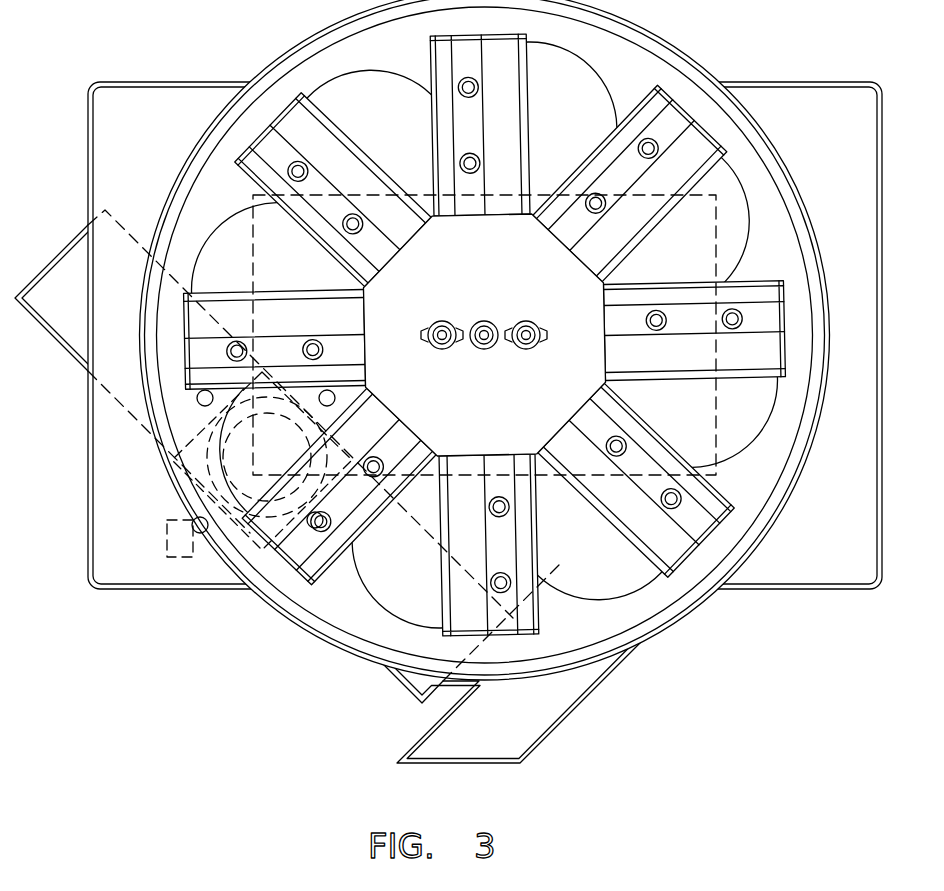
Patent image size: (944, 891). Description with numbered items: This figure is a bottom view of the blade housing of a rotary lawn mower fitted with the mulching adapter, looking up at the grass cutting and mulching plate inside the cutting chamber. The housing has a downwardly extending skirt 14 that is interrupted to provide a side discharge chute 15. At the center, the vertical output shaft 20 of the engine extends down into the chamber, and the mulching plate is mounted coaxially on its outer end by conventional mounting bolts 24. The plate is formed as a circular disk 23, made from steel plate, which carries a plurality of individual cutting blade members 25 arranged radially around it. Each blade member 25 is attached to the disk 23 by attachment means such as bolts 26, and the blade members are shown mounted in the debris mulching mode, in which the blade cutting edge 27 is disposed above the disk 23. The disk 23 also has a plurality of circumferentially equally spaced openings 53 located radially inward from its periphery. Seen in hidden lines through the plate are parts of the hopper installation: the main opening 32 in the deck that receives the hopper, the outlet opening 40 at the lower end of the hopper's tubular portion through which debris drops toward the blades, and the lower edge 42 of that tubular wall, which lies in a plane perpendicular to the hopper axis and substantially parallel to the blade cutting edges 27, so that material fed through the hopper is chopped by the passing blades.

The skirt 14 is at (678, 47).
The side discharge chute 15 is at (563, 730).
The output shaft 20 is at (484, 349).
The circular disk 23 is at (580, 623).
The mounting bolts 24 is at (442, 321).
The cutting blade members 25 is at (738, 468).
The bolts 26 is at (612, 449).
The blade cutting edge 27 is at (752, 378).
The main opening 32 is at (228, 572).
The outlet opening 40 is at (230, 467).
The lower edge 42 is at (210, 452).
The openings 53 is at (508, 391).